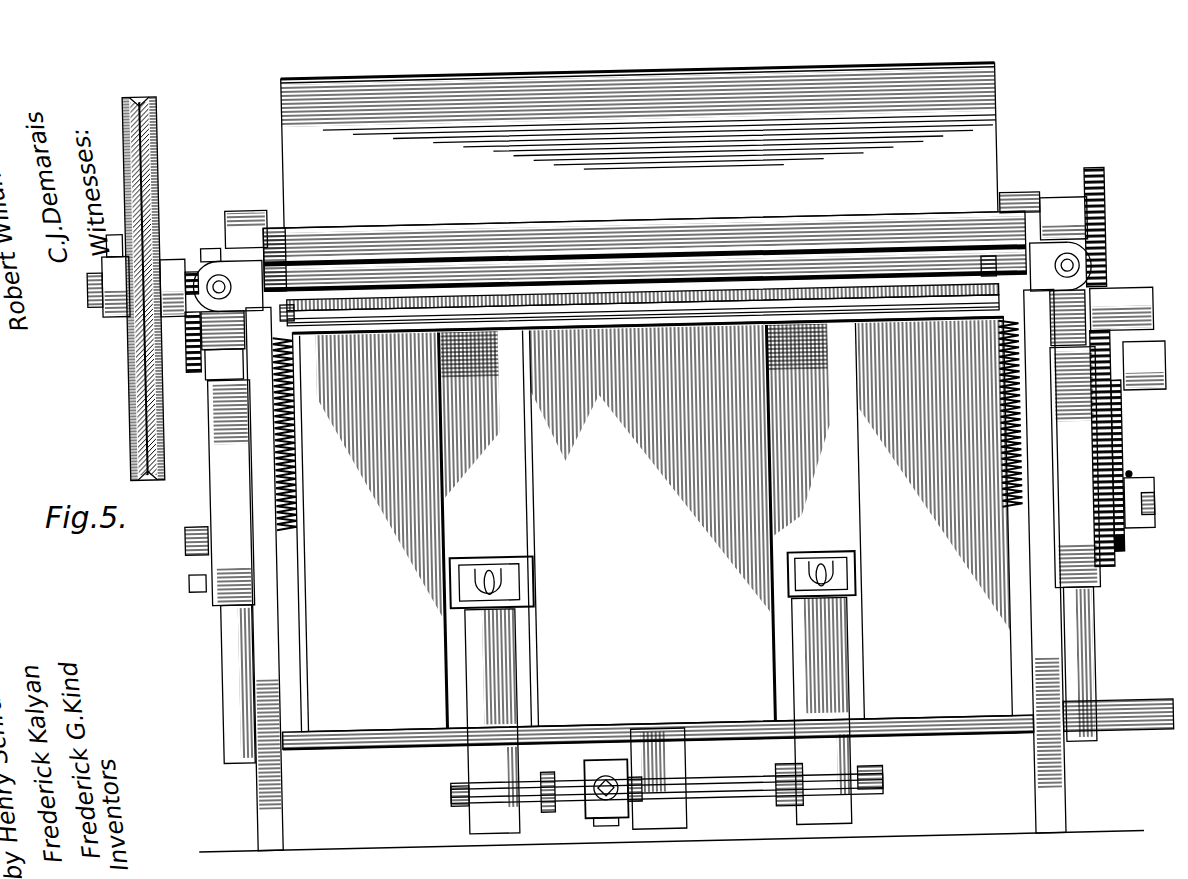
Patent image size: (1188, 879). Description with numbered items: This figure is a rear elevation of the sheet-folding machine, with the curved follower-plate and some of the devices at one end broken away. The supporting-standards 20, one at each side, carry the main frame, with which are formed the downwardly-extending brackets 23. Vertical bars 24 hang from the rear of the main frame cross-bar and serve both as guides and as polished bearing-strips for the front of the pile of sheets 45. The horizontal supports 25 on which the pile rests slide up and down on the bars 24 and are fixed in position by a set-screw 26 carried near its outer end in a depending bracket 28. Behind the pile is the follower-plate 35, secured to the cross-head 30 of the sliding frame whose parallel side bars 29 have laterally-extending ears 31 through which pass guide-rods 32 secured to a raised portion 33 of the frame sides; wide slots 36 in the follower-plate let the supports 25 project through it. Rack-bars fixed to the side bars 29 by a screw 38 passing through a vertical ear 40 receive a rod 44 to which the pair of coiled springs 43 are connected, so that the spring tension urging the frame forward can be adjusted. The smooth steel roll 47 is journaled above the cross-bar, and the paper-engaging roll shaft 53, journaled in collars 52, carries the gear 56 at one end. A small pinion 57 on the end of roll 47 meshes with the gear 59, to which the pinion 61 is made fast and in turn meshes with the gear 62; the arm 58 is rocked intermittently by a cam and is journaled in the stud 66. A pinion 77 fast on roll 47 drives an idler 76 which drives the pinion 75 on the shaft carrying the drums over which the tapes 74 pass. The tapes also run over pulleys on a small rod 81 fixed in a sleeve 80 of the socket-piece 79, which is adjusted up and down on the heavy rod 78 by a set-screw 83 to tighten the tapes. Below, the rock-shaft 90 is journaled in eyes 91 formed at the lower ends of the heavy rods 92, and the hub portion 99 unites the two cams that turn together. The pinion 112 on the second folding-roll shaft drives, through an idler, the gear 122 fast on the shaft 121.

The supporting-standards 20 is at (257, 575).
The downwardly-extending brackets 23 is at (230, 490).
The vertical bars 24 is at (462, 825).
The horizontal supports 25 is at (465, 565).
The set-screw 26 is at (485, 584).
The depending bracket 28 is at (500, 585).
The side bars of sliding frame 29 is at (285, 240).
The cross-head 30 is at (700, 233).
The laterally-extending ears 31 is at (643, 335).
The guide-rods 32 is at (642, 277).
The raised portion 33 is at (747, 730).
The follower-plate 35 is at (289, 110).
The wide slots 36 is at (443, 655).
The screw 38 is at (300, 300).
The vertical ear 40 is at (290, 280).
The coiled springs 43 is at (295, 440).
The rod 44 is at (565, 330).
The pile of sheets of paper 45 is at (830, 520).
The roll 47 is at (180, 352).
The collars 52 is at (219, 284).
The shaft 53 is at (232, 226).
The gear 56 is at (1097, 172).
The small pinion 57 is at (296, 320).
The arm 58 is at (1062, 333).
The gear 59 is at (1112, 263).
The pinion 61 is at (1118, 348).
The gear 62 is at (1118, 440).
The stud 66 is at (1105, 296).
The tapes 74 is at (535, 745).
The pinion 75 is at (195, 375).
The idler 76 is at (133, 385).
The pinion 77 is at (192, 262).
The heavy rod 78 is at (592, 770).
The socket-piece 79 is at (590, 800).
The sleeve 80 is at (630, 782).
The small rod 81 is at (450, 788).
The set-screw 83 is at (547, 778).
The rock-shaft 90 is at (1150, 718).
The eyes 91 is at (237, 745).
The heavy rods 92 is at (228, 625).
The hub portion 99 is at (1112, 418).
The pinion 112 is at (1135, 497).
The shaft 121 is at (186, 540).
The gear 122 is at (1115, 560).